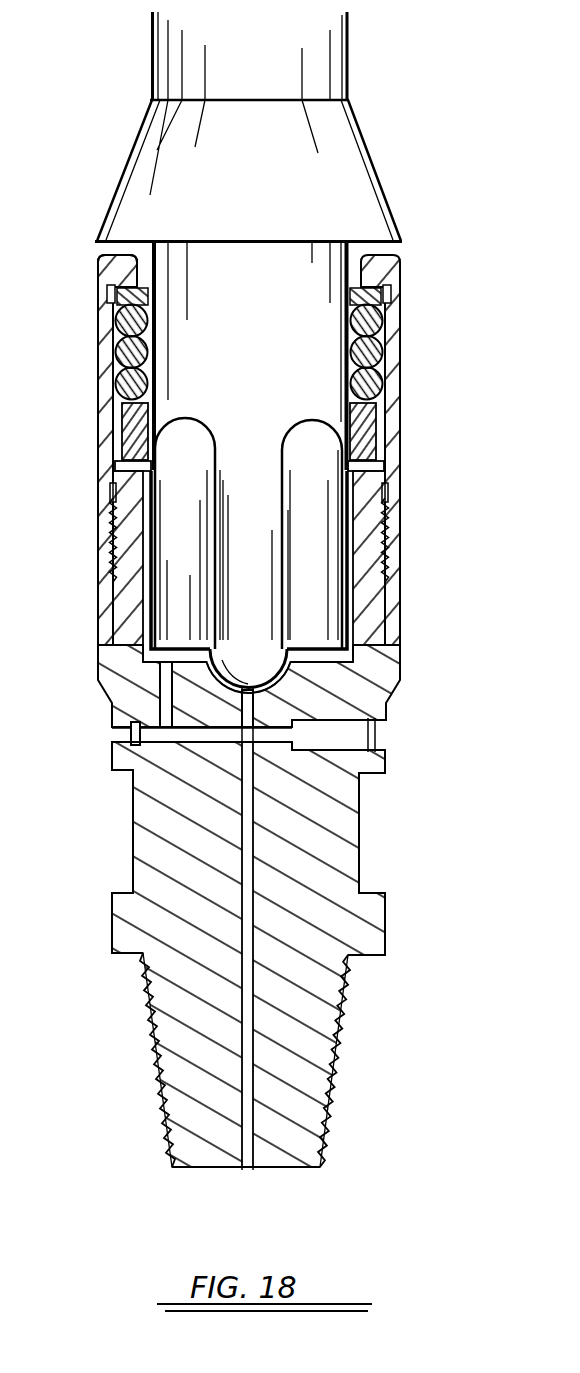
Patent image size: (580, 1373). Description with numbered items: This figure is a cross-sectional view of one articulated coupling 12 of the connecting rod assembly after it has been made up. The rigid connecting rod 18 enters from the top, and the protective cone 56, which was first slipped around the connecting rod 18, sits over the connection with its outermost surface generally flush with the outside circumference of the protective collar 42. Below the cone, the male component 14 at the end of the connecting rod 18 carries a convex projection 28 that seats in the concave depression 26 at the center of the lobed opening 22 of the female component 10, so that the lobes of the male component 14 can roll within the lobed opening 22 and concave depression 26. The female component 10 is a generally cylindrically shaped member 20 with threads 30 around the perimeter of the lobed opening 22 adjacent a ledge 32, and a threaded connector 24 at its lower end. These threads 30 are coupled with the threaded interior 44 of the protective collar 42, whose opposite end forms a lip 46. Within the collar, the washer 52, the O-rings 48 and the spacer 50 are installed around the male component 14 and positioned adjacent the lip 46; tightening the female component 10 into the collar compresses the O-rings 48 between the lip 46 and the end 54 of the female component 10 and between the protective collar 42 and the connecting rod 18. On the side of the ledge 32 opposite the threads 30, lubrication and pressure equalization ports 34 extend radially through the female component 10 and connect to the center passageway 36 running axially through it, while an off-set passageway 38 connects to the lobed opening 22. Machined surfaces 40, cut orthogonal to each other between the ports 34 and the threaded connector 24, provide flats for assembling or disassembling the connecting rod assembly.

The female component 10 is at (198, 820).
The articulated coupling 12 is at (472, 465).
The male component 14 is at (310, 538).
The connecting rod 18 is at (350, 52).
The cylindrically shaped member 20 is at (385, 928).
The lobed opening 22 is at (157, 528).
The threaded connector 24 is at (337, 1037).
The concave depression 26 is at (283, 673).
The convex projection 28 is at (303, 647).
The threads 30 is at (110, 545).
The ledge 32 is at (98, 647).
The lubrication and pressure equalization ports 34 is at (128, 735).
The center passageway 36 is at (253, 978).
The off-set passageway 38 is at (158, 683).
The machined surfaces 40 is at (360, 835).
The protective collar 42 is at (97, 393).
The threaded interior 44 is at (100, 520).
The lip 46 is at (92, 259).
The O-rings 48 is at (156, 327).
The spacer 50 is at (113, 436).
The washer 52 is at (108, 290).
The end 54 is at (112, 458).
The protective cone 56 is at (275, 207).